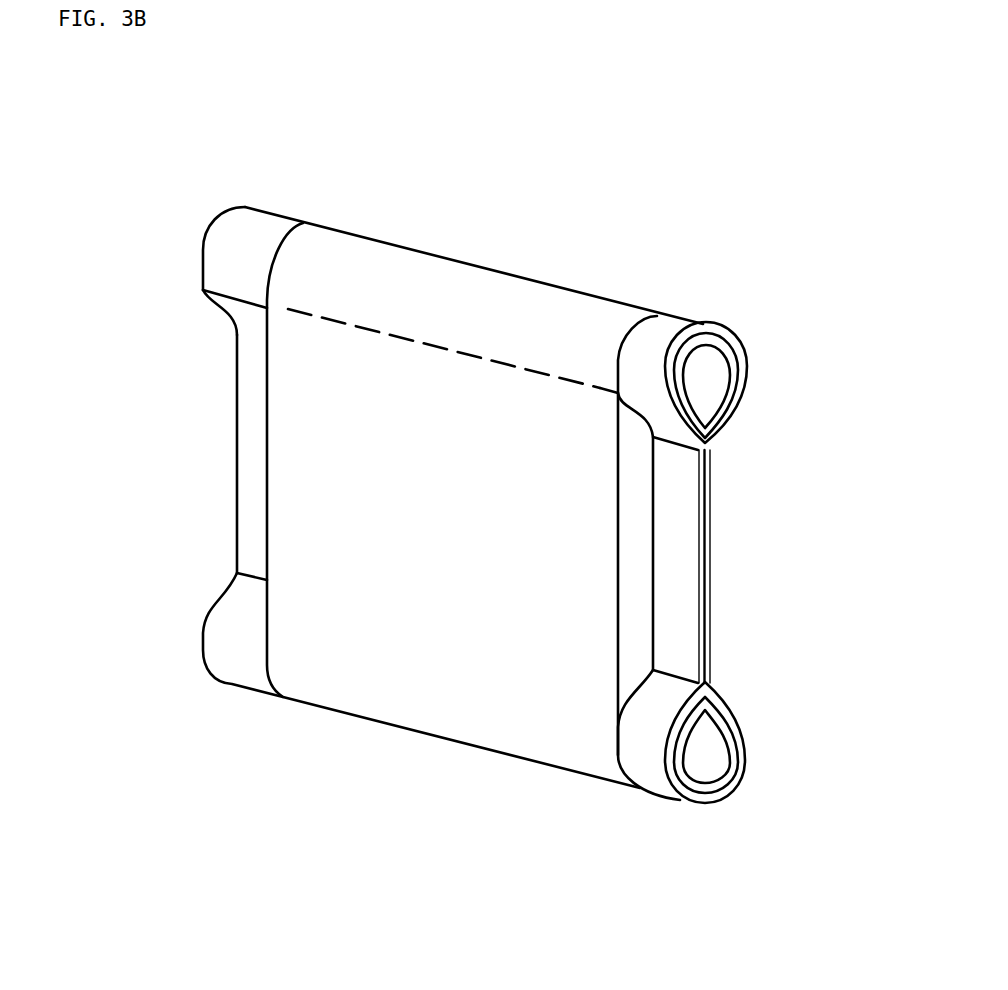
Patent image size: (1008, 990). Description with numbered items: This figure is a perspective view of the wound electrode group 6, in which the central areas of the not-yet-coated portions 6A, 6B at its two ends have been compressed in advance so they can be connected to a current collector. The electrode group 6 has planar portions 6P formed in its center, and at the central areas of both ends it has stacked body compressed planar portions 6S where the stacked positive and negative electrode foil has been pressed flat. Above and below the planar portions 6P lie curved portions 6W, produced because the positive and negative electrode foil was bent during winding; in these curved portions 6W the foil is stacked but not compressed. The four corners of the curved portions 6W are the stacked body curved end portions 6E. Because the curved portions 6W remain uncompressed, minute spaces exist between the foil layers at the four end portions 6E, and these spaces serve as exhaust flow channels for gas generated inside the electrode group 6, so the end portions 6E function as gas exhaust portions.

The electrode group 6 is at (606, 208).
The not-yet-coated portion 6A is at (258, 233).
The not-yet-coated portion 6B is at (657, 337).
The stacked body curved end portion 6E is at (205, 243).
The stacked body compressed planar portion 6S is at (248, 465).
The planar portion 6P is at (480, 665).
The curved portion 6W is at (365, 276).